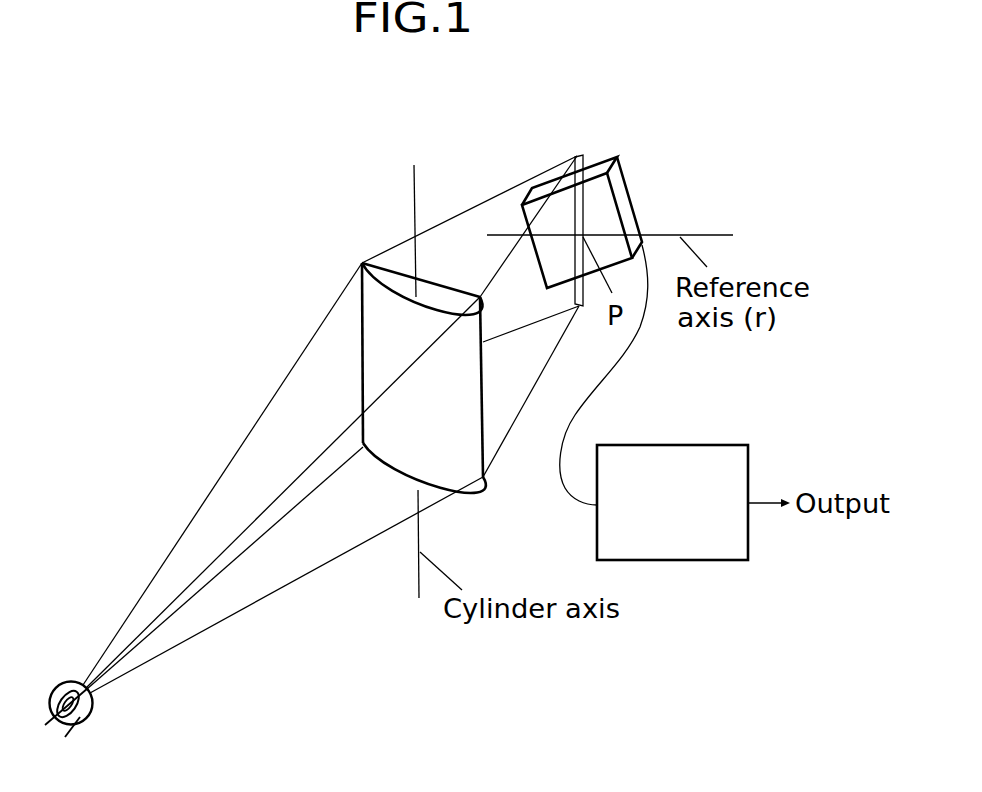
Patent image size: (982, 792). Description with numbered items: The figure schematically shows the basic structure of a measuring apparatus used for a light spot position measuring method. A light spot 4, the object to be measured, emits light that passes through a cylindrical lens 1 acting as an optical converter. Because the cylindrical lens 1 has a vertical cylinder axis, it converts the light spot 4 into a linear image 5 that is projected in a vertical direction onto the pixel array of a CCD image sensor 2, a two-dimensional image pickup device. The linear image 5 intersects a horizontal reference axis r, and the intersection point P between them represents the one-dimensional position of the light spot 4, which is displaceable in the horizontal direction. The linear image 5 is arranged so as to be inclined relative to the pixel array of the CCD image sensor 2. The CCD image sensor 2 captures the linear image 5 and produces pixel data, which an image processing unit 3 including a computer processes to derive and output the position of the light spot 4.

The cylindrical lens 1 is at (362, 297).
The CCD image sensor 2 is at (525, 216).
The image processing unit 3 is at (678, 560).
The light spot 4 is at (93, 708).
The linear image 5 is at (585, 205).